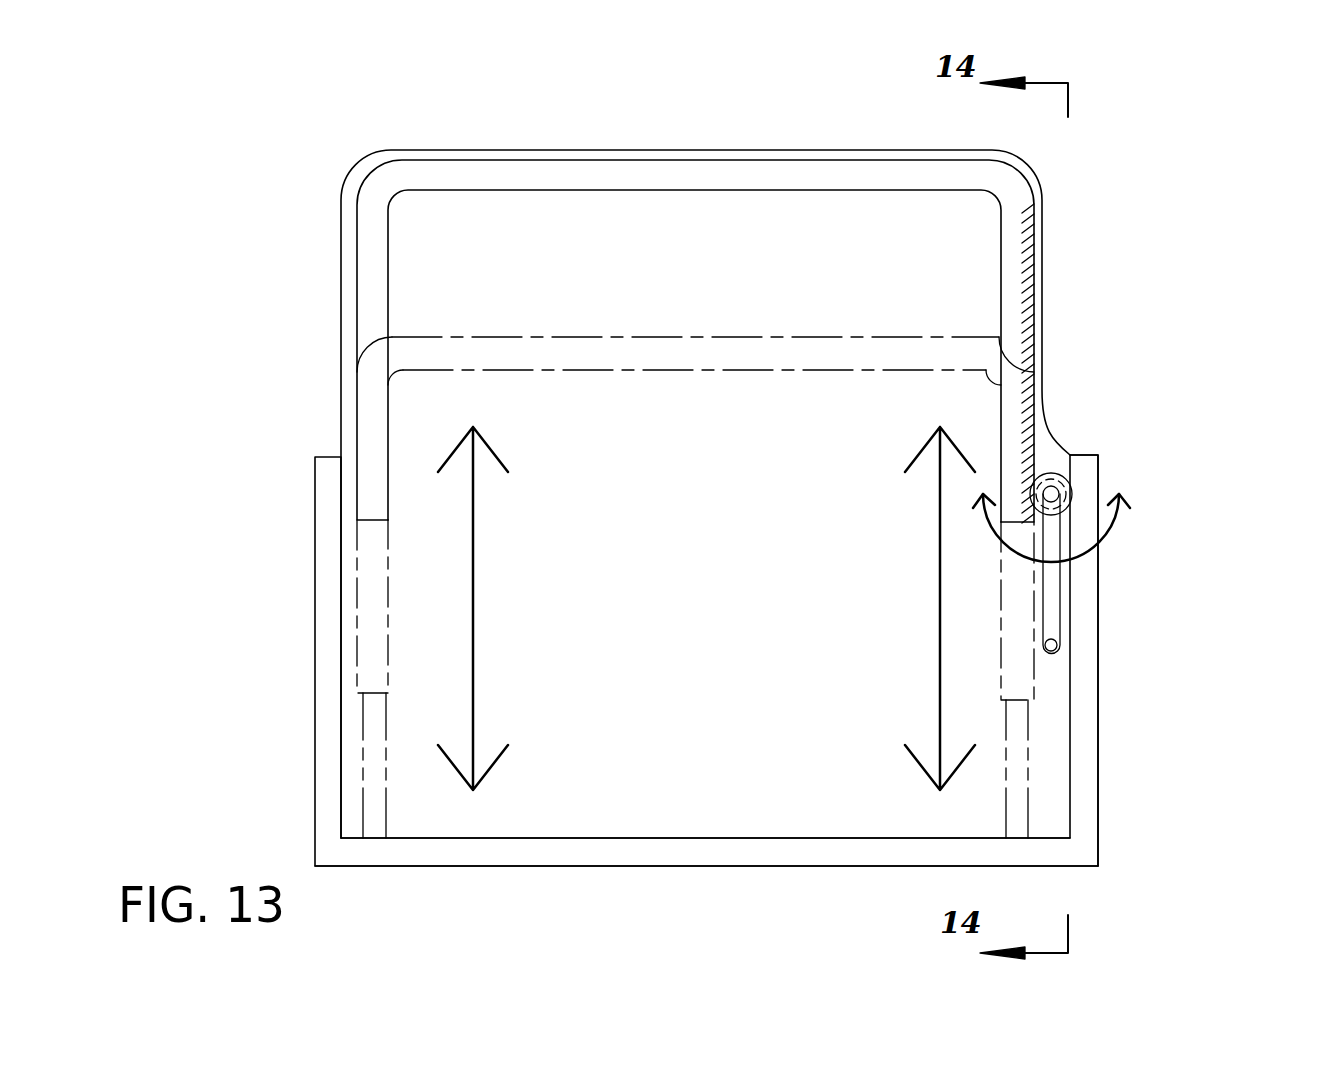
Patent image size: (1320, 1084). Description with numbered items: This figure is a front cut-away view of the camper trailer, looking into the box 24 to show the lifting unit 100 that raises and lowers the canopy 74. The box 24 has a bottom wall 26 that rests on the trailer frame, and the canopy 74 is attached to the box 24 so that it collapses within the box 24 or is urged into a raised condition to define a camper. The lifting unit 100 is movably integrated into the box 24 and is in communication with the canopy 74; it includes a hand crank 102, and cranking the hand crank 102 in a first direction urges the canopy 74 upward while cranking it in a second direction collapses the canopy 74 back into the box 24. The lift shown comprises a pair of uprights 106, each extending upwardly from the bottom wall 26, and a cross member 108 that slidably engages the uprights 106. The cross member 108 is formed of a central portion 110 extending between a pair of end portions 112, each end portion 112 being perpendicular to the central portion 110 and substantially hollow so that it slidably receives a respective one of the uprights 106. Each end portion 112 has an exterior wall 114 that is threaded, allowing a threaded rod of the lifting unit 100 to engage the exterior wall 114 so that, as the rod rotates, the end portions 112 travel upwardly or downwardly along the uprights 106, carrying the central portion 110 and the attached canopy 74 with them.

The box 24 is at (317, 772).
The bottom wall 26 is at (548, 866).
The canopy 74 is at (343, 209).
The lifting unit 100 is at (1053, 452).
The hand crank 102 is at (1095, 585).
The uprights 106 is at (363, 718).
The cross member 108 is at (378, 178).
The central portion 110 is at (625, 172).
The end portions 112 is at (372, 281).
The exterior wall 114 is at (1017, 231).